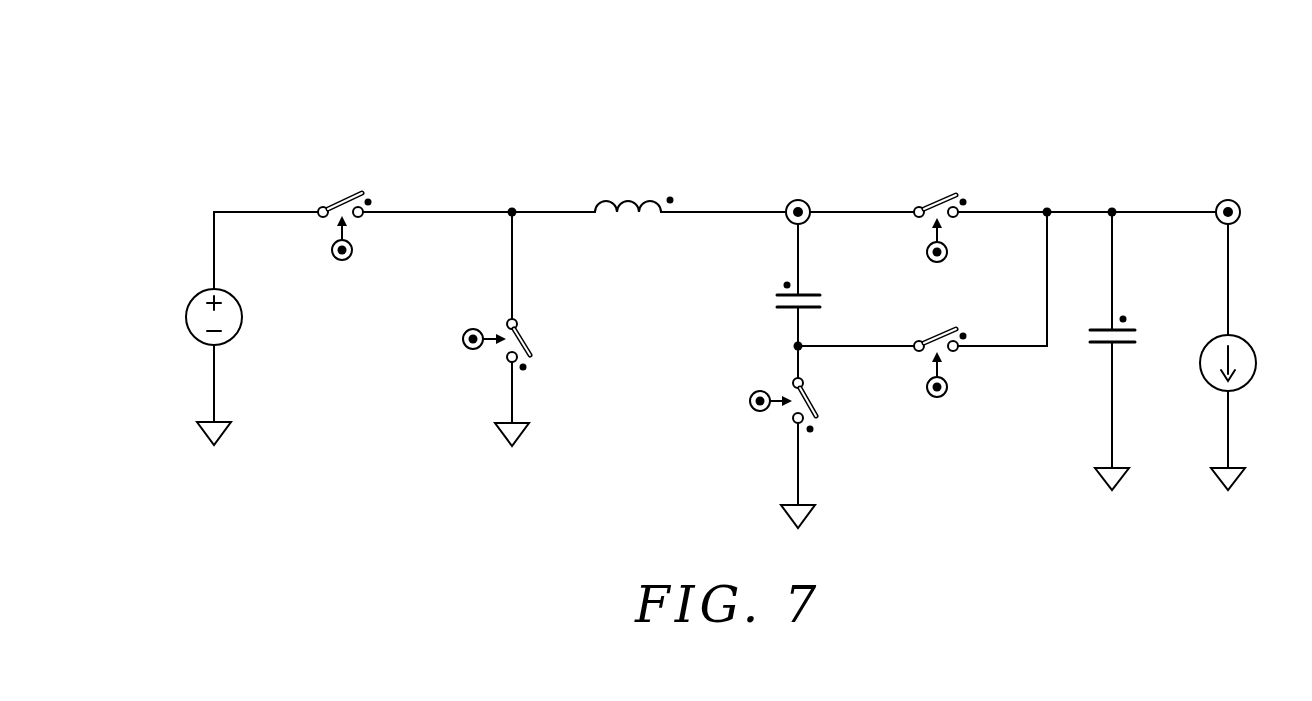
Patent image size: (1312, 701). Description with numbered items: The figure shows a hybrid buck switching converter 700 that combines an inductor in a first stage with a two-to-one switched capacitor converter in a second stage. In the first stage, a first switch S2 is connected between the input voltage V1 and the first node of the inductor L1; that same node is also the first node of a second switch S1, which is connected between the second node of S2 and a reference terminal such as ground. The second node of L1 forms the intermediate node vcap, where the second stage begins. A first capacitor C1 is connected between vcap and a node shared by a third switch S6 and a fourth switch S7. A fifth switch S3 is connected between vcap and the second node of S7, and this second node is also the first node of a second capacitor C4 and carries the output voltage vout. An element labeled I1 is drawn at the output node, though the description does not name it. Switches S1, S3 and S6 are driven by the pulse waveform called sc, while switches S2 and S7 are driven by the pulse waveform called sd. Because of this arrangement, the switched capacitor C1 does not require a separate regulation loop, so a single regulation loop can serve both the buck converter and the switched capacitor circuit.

The hybrid buck switching converter 700 is at (315, 78).
The input voltage V1 is at (231, 367).
The first switch S2 is at (346, 216).
The second switch S1 is at (509, 374).
The inductor L1 is at (634, 195).
The intermediate node vcap is at (793, 198).
The first capacitor C1 is at (786, 310).
The fifth switch S3 is at (940, 216).
The fourth switch S7 is at (941, 350).
The third switch S6 is at (799, 447).
The second capacitor C4 is at (1126, 403).
The output voltage vout is at (1240, 201).
The load current source I1 is at (1240, 412).